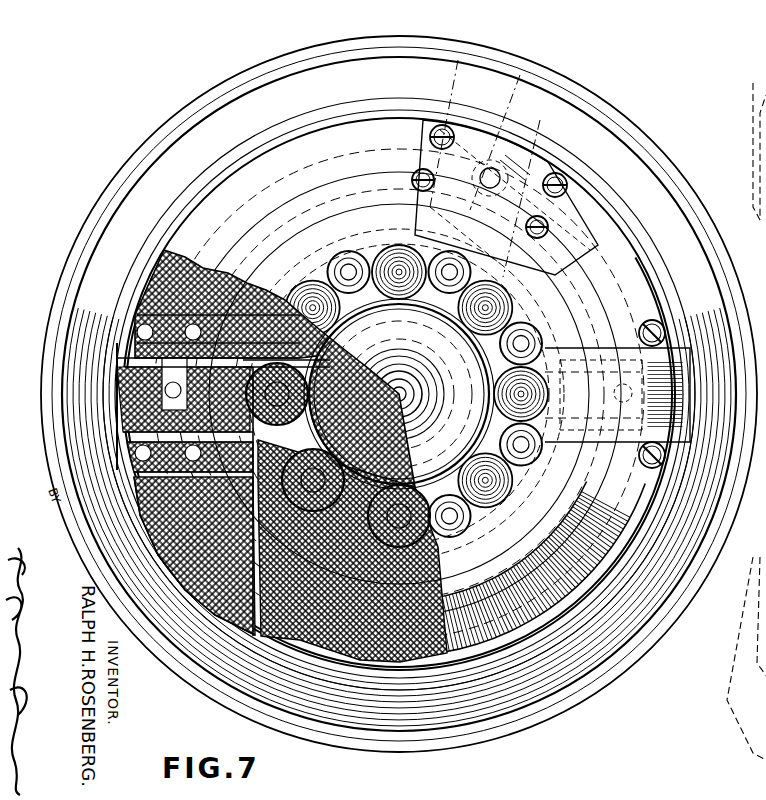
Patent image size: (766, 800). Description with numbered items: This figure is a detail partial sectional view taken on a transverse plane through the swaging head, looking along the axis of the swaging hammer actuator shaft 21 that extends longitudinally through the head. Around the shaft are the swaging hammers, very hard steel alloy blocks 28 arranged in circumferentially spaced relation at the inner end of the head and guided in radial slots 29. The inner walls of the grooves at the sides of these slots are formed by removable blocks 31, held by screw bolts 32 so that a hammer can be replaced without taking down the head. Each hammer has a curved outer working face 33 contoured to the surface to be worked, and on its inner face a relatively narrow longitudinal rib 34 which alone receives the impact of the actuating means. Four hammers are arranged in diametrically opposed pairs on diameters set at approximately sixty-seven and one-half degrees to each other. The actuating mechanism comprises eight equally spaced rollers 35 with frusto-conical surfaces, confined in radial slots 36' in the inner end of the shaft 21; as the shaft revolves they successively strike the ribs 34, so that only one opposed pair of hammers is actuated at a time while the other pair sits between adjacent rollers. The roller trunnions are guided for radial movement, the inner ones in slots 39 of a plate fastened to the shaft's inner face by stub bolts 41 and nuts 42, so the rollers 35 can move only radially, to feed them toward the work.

The swaging hammer actuator shaft 21 is at (262, 345).
The swaging hammer blocks 28 is at (127, 367).
The radial slots 29 is at (128, 447).
The removable blocks 31 is at (173, 323).
The screw bolts 32 is at (560, 183).
The outer working faces 33 is at (677, 380).
The longitudinal rib 34 is at (243, 358).
The rollers 35 is at (143, 475).
The radial slots 36' is at (399, 394).
The slots 39 is at (350, 270).
The stub bolts 41 is at (543, 337).
The nuts 42 is at (478, 347).